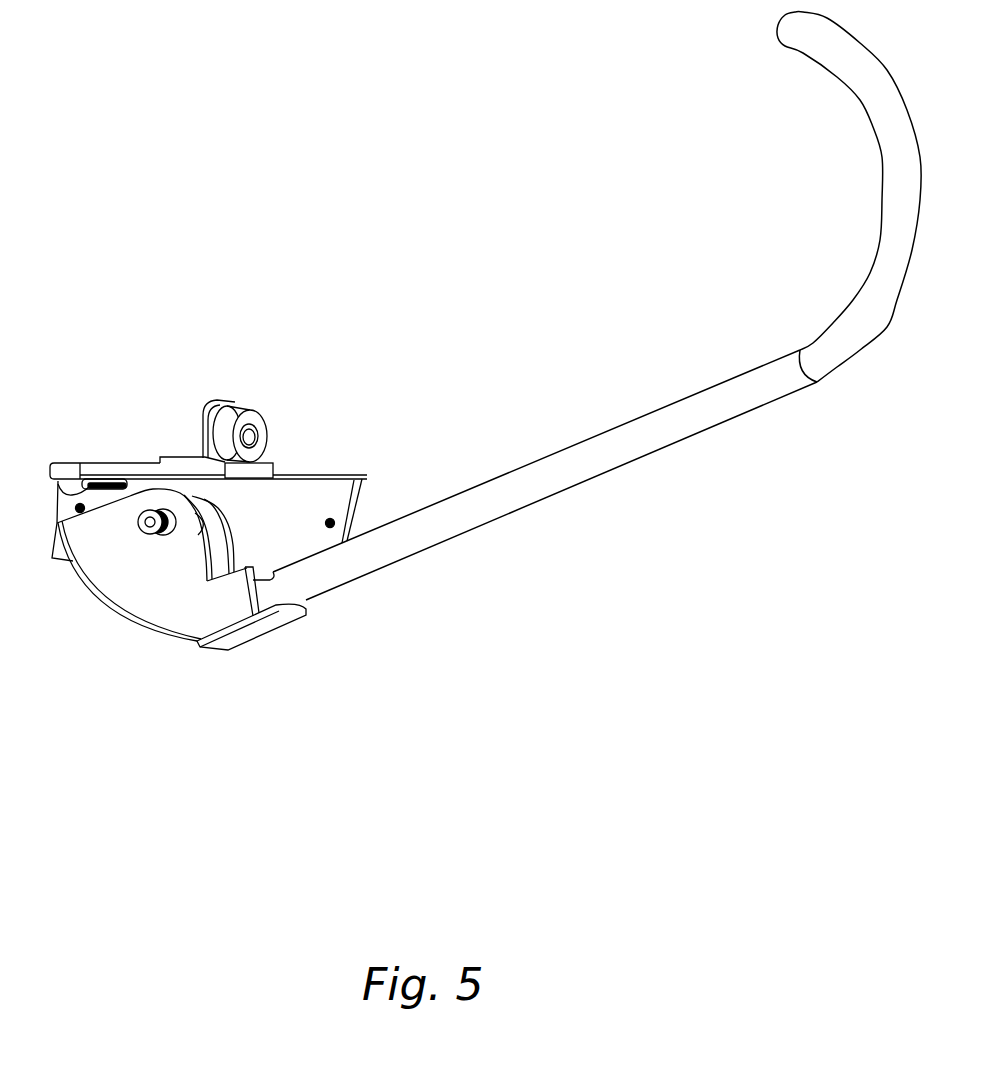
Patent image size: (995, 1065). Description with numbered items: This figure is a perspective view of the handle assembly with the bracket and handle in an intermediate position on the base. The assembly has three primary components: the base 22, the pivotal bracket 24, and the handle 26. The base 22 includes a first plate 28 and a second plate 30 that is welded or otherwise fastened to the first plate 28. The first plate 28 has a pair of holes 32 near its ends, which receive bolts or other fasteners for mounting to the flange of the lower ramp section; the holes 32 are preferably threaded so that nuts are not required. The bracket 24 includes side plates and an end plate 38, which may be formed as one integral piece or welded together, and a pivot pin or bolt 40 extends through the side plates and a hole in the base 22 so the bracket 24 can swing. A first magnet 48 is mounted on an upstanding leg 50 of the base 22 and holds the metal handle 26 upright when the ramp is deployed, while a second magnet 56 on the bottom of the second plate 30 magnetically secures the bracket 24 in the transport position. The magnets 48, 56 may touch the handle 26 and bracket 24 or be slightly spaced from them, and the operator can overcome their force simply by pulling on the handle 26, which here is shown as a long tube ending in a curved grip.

The base 22 is at (300, 475).
The pivotal bracket 24 is at (155, 608).
The handle 26 is at (615, 463).
The first plate 28 is at (320, 490).
The second plate 30 is at (95, 463).
The holes 32 is at (76, 508).
The end plate 38 is at (255, 635).
The pivot pin 40 is at (138, 522).
The first magnet 48 is at (258, 413).
The upstanding leg 50 is at (203, 430).
The second magnet 56 is at (58, 489).